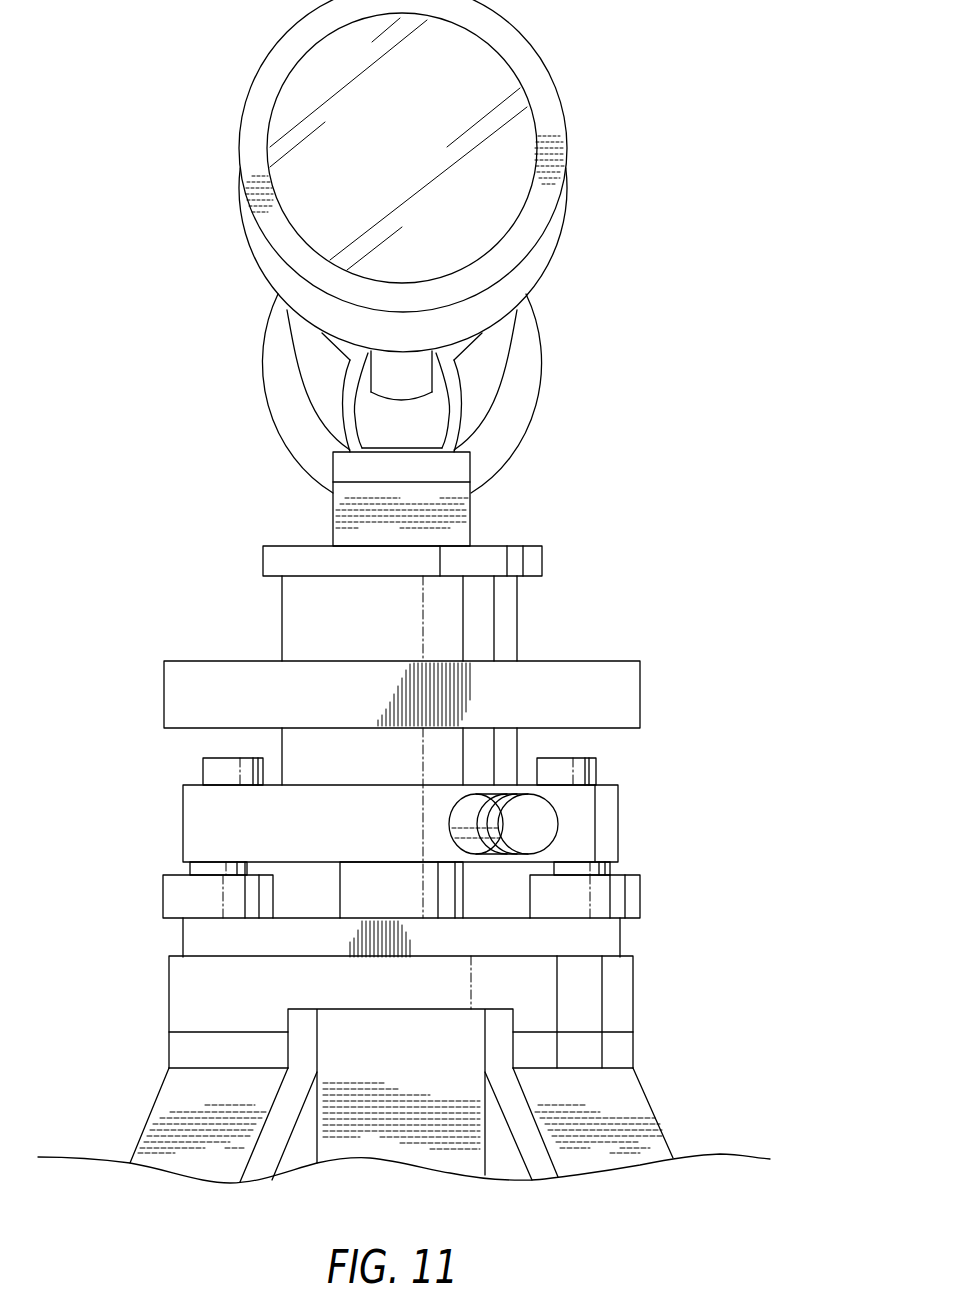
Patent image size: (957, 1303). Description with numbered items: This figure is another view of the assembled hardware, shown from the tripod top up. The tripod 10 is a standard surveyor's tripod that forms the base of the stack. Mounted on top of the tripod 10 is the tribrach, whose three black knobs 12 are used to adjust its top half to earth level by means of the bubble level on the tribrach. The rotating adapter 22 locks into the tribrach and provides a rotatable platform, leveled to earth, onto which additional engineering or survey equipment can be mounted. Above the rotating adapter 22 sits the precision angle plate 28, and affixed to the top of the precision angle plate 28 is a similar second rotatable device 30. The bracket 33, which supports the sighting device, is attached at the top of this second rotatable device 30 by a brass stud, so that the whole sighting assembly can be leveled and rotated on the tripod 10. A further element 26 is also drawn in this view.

The tripod 10 is at (651, 1115).
The black knobs 12 is at (640, 895).
The rotating adapter 22 is at (517, 745).
The clamp block 26 is at (618, 823).
The precision angle plate 28 is at (640, 695).
The second rotatable device 30 is at (517, 618).
The bracket 33 is at (470, 506).